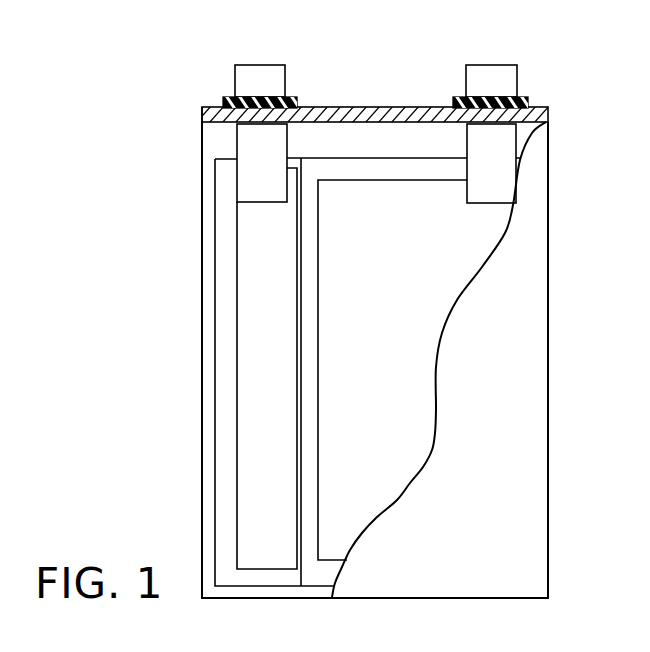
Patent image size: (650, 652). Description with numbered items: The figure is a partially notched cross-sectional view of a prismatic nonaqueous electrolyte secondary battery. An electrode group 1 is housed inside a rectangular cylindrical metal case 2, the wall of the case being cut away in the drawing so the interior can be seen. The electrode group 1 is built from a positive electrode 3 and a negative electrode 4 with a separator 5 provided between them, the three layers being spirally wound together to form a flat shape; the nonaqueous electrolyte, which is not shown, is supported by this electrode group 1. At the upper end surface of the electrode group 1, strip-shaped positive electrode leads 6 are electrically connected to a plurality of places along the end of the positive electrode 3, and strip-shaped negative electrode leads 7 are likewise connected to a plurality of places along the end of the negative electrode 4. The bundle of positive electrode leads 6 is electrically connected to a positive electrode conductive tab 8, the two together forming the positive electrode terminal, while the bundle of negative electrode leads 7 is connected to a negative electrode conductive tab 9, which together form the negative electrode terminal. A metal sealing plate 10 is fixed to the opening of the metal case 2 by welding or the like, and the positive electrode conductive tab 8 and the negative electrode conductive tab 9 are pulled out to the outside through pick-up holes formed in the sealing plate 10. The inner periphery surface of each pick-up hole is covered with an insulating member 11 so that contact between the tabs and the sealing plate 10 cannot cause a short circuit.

The electrode group 1 is at (418, 142).
The metal case 2 is at (540, 445).
The positive electrode 3 is at (248, 333).
The negative electrode 4 is at (362, 222).
The separator 5 is at (308, 432).
The positive electrode leads 6 is at (245, 145).
The negative electrode leads 7 is at (505, 148).
The positive electrode conductive tab 8 is at (257, 73).
The negative electrode conductive tab 9 is at (497, 72).
The sealing plate 10 is at (220, 107).
The insulating member 11 is at (291, 100).